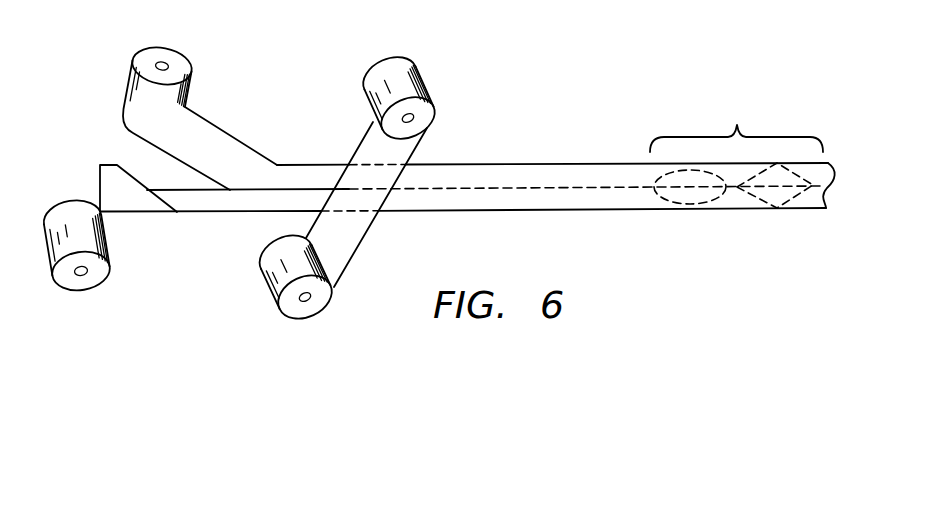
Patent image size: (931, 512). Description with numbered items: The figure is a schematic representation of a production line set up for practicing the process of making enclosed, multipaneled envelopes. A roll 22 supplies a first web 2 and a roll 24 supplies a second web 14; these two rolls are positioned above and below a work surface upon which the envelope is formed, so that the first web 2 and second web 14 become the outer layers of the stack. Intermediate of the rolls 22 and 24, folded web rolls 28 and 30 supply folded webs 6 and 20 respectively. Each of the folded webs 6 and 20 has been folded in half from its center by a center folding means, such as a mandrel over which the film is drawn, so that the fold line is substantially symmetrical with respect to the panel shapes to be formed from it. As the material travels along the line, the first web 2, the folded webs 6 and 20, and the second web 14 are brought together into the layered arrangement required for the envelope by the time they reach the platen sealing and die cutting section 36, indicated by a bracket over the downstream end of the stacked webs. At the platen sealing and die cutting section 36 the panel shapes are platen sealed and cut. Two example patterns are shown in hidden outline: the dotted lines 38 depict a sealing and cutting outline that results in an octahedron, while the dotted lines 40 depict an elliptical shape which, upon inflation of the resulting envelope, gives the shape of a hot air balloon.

The first web 2 is at (355, 253).
The folded web 6 is at (275, 164).
The second web 14 is at (420, 146).
The folded web 20 is at (223, 202).
The roll 22 is at (314, 300).
The roll 24 is at (394, 78).
The folded web roll 28 is at (182, 66).
The folded web roll 30 is at (93, 277).
The platen sealing and die cutting section 36 is at (736, 123).
The dotted lines 38 is at (788, 203).
The dotted lines 40 is at (700, 196).